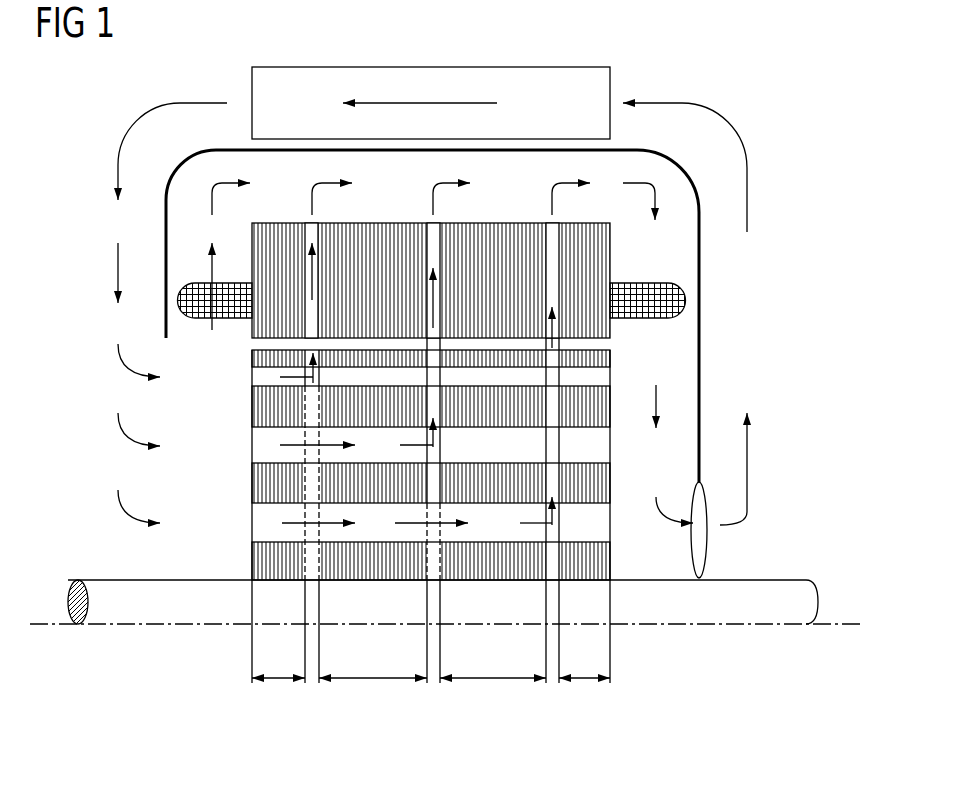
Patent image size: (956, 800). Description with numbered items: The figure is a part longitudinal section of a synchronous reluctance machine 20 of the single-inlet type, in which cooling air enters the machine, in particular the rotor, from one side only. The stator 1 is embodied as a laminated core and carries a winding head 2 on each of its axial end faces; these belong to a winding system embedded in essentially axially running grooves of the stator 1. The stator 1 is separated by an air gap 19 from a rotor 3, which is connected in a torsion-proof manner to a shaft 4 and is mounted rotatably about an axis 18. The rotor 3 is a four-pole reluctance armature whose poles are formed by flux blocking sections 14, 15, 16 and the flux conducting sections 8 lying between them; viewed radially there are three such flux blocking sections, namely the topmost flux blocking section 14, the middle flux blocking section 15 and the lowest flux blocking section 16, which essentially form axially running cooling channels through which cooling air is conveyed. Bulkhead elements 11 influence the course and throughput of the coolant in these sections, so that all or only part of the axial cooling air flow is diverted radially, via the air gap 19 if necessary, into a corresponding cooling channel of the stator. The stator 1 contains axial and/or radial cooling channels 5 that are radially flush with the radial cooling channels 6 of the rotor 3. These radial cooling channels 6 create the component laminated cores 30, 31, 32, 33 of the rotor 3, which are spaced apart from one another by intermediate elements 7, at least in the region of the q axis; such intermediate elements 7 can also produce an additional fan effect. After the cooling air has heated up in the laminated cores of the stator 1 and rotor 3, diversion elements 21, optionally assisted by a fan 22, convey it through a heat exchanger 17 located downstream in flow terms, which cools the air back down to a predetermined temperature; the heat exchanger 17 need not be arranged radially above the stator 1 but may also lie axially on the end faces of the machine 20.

The stator 1 is at (278, 238).
The winding head 2 is at (200, 290).
The rotor 3 is at (372, 565).
The shaft 4 is at (148, 614).
The cooling channels 5 is at (310, 235).
The radial cooling channels 6 is at (314, 379).
The intermediate elements 7 is at (314, 564).
The flux conducting sections 8 is at (263, 418).
The bulkhead elements 11 is at (318, 562).
The topmost flux blocking section 14 is at (606, 378).
The middle flux blocking section 15 is at (606, 436).
The lowest flux blocking section 16 is at (606, 527).
The heat exchanger 17 is at (511, 67).
The axis 18 is at (847, 625).
The air gap 19 is at (608, 344).
The synchronous reluctance machine 20 is at (672, 60).
The diversion elements 21 is at (165, 237).
The fan 22 is at (703, 562).
The component laminated core 30 is at (280, 683).
The component laminated core 31 is at (370, 683).
The component laminated core 32 is at (493, 683).
The component laminated core 33 is at (583, 683).